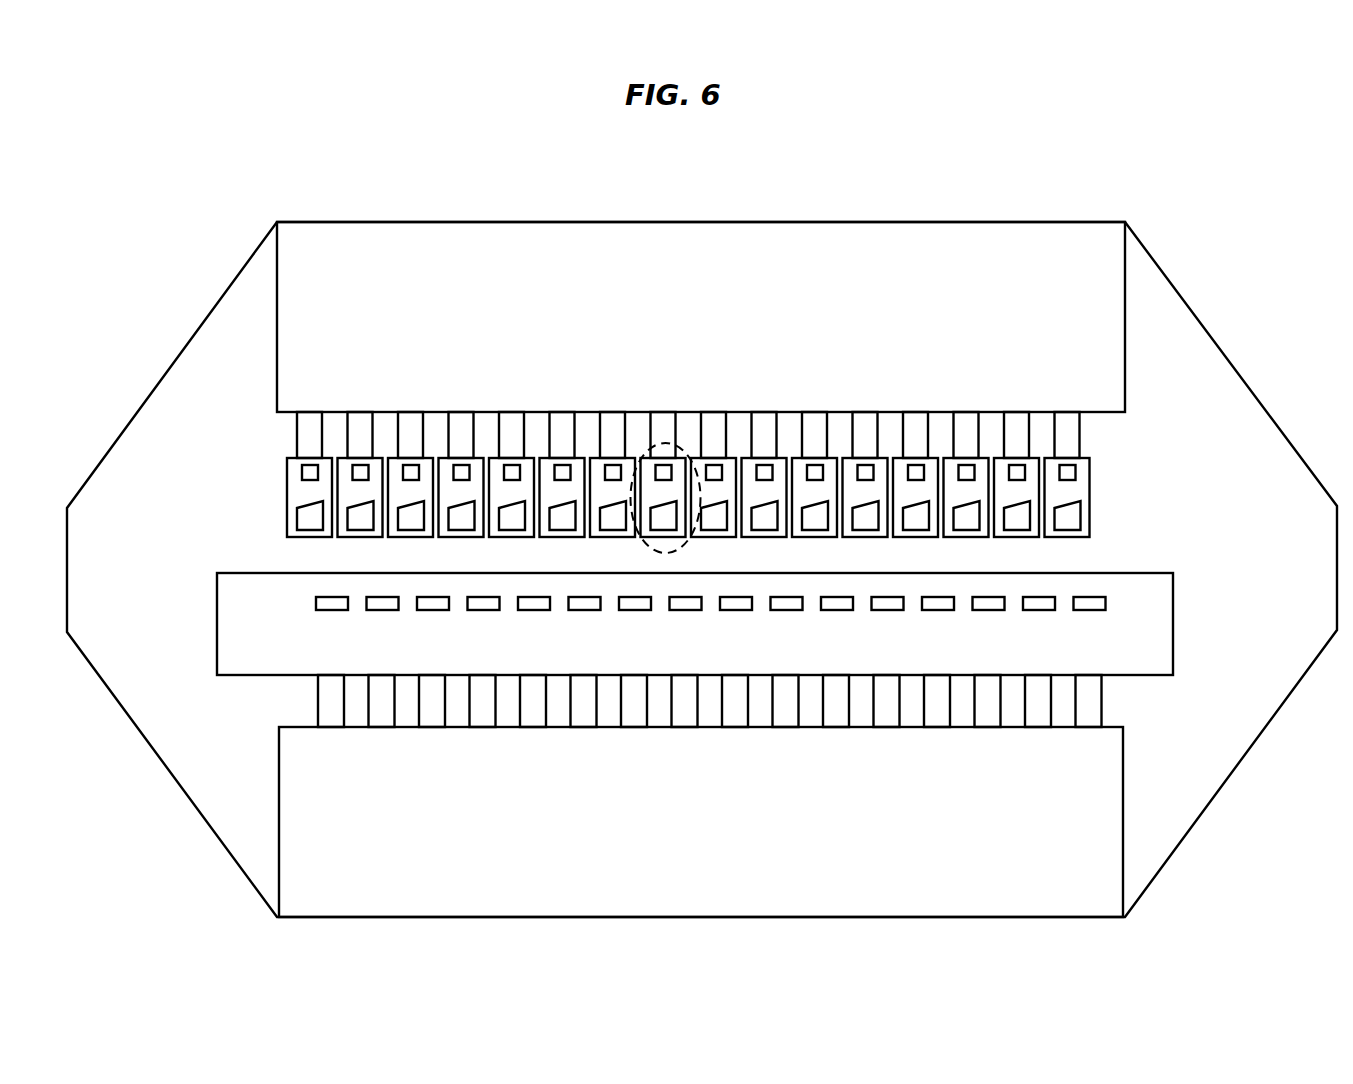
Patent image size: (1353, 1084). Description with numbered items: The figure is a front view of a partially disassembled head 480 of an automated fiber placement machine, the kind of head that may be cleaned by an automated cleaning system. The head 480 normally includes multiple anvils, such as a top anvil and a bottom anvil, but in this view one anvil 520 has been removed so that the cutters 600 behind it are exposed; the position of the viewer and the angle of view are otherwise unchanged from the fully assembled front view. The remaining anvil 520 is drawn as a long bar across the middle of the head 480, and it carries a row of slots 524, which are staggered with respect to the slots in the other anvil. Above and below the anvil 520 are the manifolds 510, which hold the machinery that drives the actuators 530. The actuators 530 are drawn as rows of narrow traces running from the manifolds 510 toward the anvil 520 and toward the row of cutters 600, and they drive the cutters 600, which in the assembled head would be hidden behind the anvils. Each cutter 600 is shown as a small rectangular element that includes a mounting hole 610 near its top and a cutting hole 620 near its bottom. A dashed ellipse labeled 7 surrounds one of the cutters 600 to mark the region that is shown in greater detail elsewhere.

The head 480 is at (1247, 384).
The manifold 510 is at (877, 222).
The anvil 520 is at (1173, 592).
The slot 524 is at (537, 611).
The actuator 530 is at (1083, 429).
The cutter 600 is at (287, 489).
The mounting hole 610 is at (302, 471).
The cutting hole 620 is at (310, 517).
The detail region of FIG. 7 is at (641, 536).